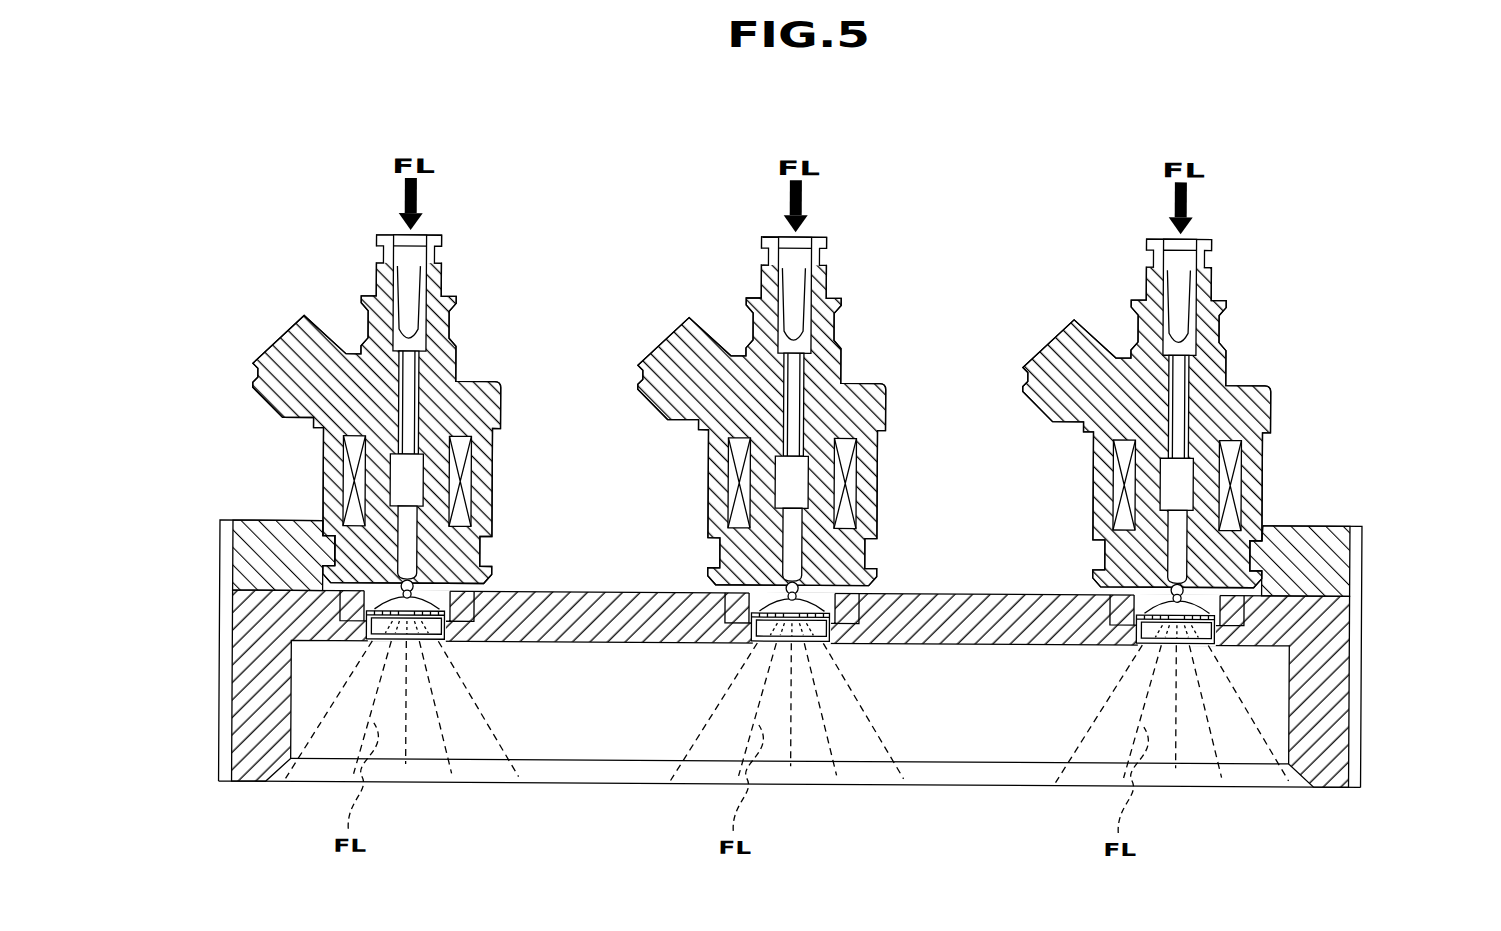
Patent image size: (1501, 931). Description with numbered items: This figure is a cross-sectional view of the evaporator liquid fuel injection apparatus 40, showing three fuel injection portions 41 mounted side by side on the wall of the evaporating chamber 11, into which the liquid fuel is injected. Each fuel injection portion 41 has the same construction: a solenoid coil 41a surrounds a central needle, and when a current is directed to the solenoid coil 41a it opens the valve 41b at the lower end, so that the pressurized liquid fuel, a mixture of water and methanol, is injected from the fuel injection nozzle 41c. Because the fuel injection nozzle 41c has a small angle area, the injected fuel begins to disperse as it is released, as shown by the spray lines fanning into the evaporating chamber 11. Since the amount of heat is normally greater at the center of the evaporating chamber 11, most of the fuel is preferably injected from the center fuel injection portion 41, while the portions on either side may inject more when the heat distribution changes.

The evaporating chamber 11 is at (300, 737).
The liquid fuel injection apparatus 40 is at (889, 187).
The fuel injection portion 41 is at (500, 344).
The solenoid coil 41a is at (527, 445).
The valve 41b is at (627, 537).
The fuel injection nozzle 41c is at (627, 581).